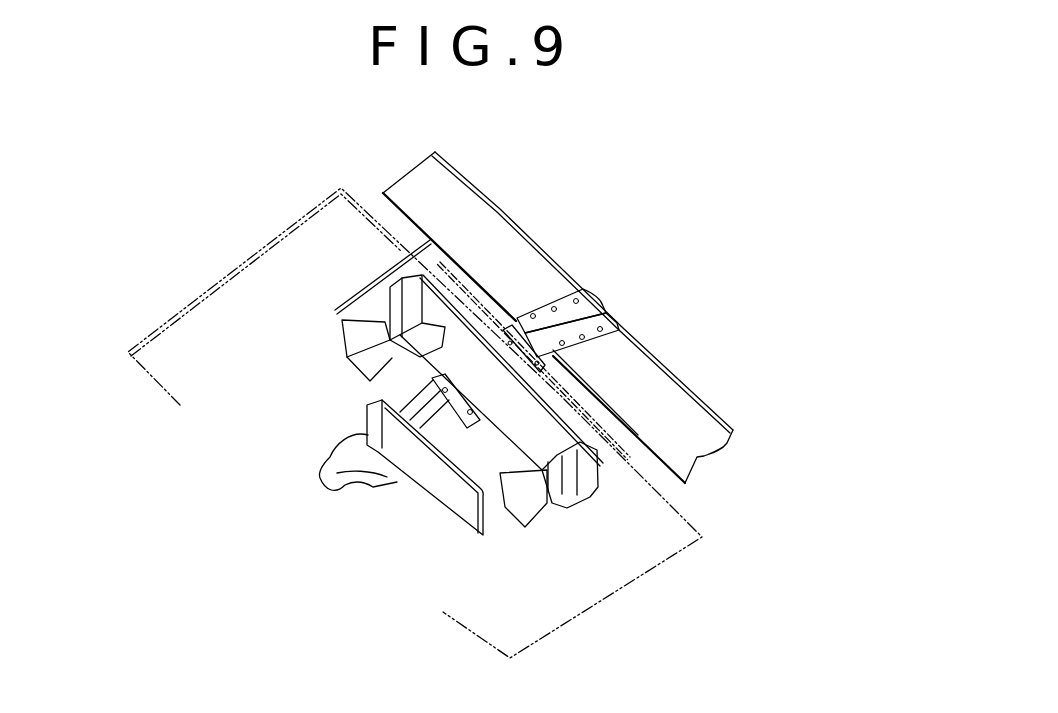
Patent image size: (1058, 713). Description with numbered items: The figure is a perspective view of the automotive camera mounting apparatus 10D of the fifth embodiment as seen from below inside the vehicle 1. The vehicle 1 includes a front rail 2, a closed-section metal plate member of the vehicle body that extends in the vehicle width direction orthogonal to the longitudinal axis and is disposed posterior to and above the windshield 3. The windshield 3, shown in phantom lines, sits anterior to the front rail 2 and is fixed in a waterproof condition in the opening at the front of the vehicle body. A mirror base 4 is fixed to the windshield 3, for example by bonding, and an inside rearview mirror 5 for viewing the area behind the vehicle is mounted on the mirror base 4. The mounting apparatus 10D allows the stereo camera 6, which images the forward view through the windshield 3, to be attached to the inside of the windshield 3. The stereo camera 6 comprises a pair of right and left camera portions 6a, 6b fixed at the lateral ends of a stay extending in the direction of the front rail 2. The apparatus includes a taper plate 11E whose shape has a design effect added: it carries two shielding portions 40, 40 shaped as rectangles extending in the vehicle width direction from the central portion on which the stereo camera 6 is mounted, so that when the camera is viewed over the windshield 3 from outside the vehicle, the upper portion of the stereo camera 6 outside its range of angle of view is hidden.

The vehicle 1 is at (249, 196).
The front rail 2 is at (700, 456).
The windshield 3 is at (210, 307).
The mirror base 4 is at (318, 488).
The inside rearview mirror 5 is at (417, 497).
The stereo camera 6 is at (572, 527).
The camera portion 6a is at (530, 525).
The camera portion 6b is at (345, 358).
The automotive camera mounting apparatus 10D is at (513, 292).
The taper plate 11E is at (585, 306).
The shielding portion 40 is at (435, 265).